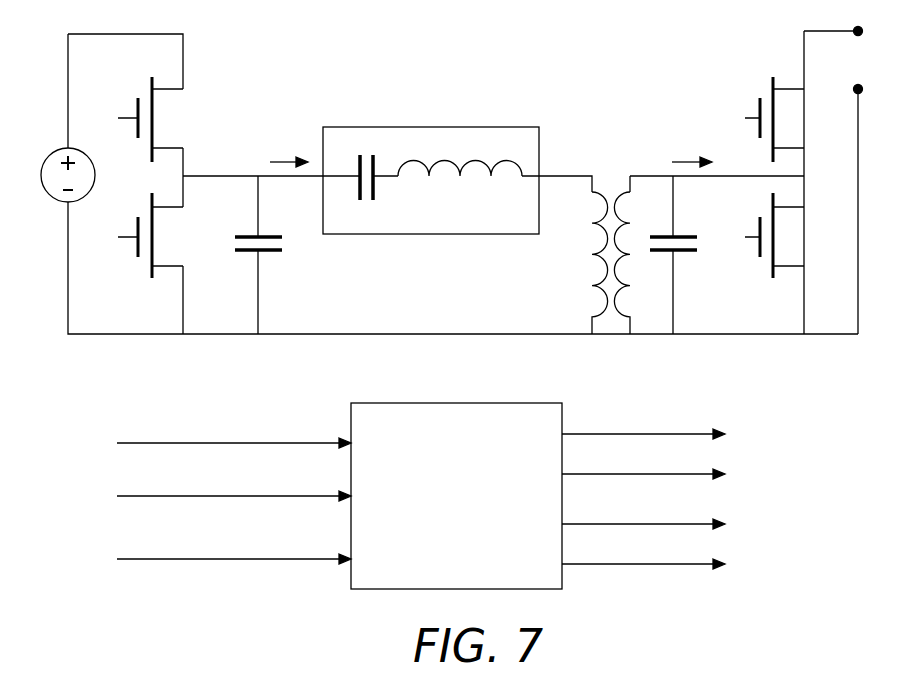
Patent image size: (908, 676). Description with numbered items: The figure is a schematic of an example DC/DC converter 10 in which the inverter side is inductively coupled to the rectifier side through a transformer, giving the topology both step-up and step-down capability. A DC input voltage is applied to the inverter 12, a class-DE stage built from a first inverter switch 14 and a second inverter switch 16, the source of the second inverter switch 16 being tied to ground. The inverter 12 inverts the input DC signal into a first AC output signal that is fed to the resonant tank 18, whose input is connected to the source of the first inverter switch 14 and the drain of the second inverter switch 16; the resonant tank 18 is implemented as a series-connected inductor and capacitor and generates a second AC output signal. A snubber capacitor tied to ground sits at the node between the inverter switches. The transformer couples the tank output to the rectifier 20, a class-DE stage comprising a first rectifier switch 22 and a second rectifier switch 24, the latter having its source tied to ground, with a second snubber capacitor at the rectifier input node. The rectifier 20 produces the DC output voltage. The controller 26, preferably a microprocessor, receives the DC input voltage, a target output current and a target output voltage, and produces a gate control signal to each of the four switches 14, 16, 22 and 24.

The DC/DC converter 10 is at (476, 49).
The inverter 12 is at (181, 159).
The first inverter switch 14 is at (209, 117).
The second inverter switch 16 is at (195, 249).
The resonant tank 18 is at (509, 127).
The rectifier 20 is at (770, 154).
The first rectifier switch 22 is at (808, 135).
The second rectifier switch 24 is at (810, 250).
The controller 26 is at (475, 403).